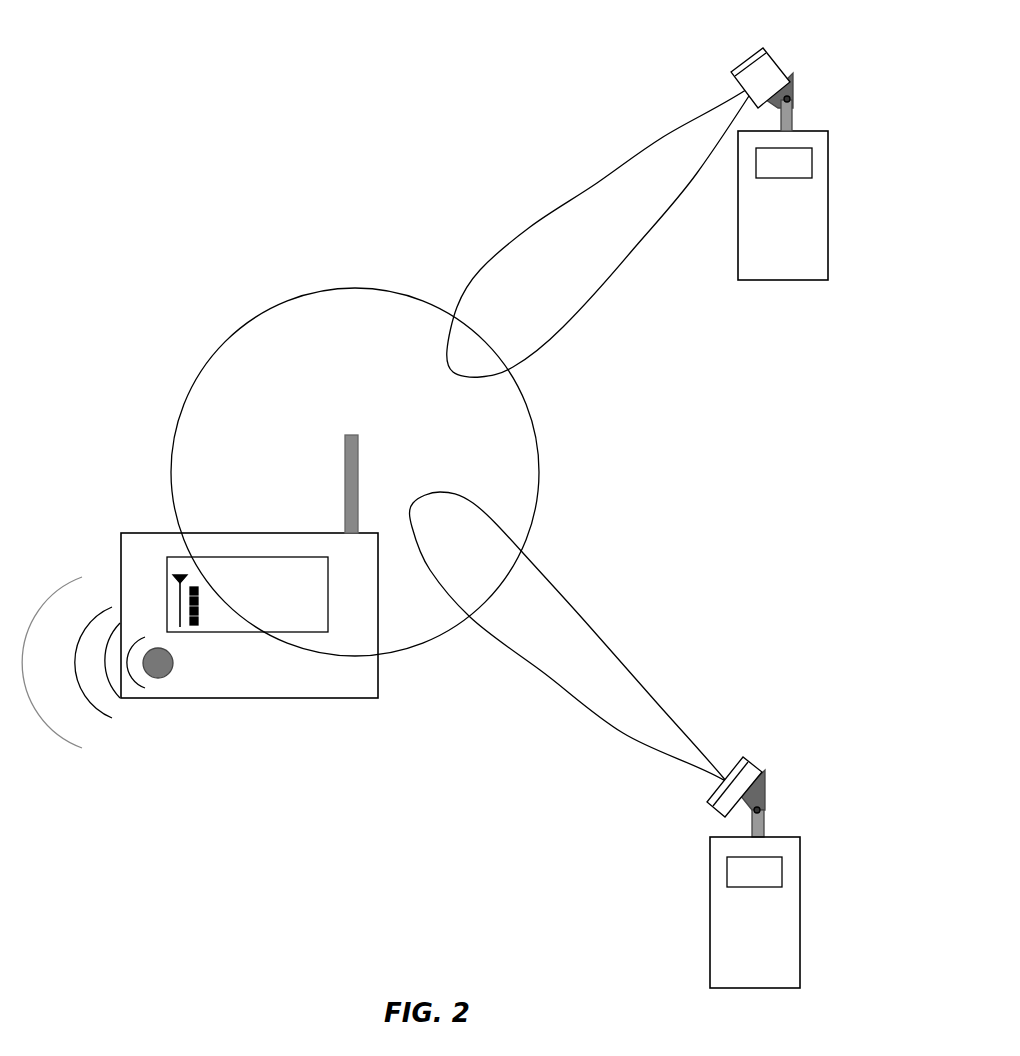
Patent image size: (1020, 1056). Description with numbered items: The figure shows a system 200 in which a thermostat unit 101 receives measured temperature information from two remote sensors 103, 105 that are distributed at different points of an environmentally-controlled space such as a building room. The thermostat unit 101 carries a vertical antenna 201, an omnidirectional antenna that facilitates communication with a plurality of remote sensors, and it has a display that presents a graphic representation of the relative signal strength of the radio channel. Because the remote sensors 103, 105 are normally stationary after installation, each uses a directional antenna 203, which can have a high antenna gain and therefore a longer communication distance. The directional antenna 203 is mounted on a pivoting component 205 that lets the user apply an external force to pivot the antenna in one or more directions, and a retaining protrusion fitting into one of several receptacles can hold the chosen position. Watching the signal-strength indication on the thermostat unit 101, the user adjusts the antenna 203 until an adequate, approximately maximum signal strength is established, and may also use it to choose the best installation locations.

The thermostat unit 101 is at (250, 706).
The remote sensor 103 is at (785, 286).
The remote sensor 105 is at (806, 932).
The system 200 is at (779, 505).
The vertical antenna 201 is at (346, 448).
The directional antenna 203 is at (774, 58).
The pivoting component 205 is at (791, 101).